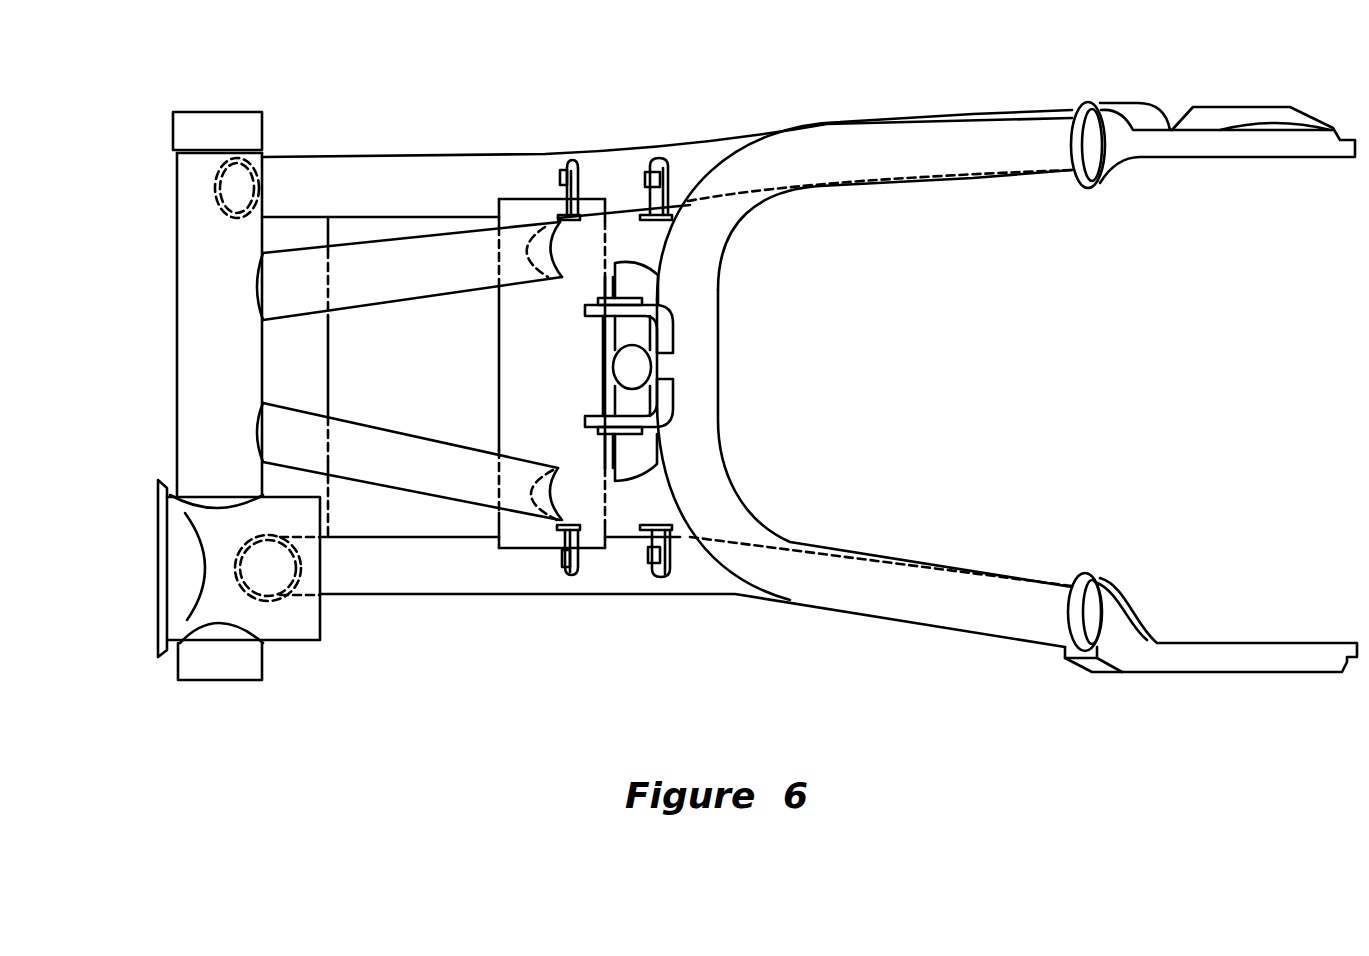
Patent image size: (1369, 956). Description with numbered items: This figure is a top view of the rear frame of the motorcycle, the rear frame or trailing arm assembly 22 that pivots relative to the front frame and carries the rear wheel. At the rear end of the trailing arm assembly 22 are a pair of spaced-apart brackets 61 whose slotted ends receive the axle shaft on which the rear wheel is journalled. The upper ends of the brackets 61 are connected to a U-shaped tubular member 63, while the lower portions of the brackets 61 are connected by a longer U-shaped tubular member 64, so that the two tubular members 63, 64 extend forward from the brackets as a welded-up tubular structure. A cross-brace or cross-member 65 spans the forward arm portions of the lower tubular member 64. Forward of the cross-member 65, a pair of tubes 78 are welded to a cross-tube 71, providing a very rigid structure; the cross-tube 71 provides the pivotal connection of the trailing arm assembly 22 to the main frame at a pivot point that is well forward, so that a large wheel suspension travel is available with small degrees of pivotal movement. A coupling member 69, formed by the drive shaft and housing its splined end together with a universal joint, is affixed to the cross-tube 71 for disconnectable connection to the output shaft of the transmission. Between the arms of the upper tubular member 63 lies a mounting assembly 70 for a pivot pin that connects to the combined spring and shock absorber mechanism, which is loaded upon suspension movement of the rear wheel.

The trailing arm assembly 22 is at (1171, 70).
The brackets 61 is at (1250, 148).
The U-shaped tubular member 63 is at (738, 497).
The U-shaped tubular member 64 is at (508, 167).
The cross-member 65 is at (512, 374).
The coupling member 69 is at (293, 643).
The mounting assembly 70 is at (673, 400).
The cross-tube 71 is at (195, 400).
The tubes 78 is at (419, 283).